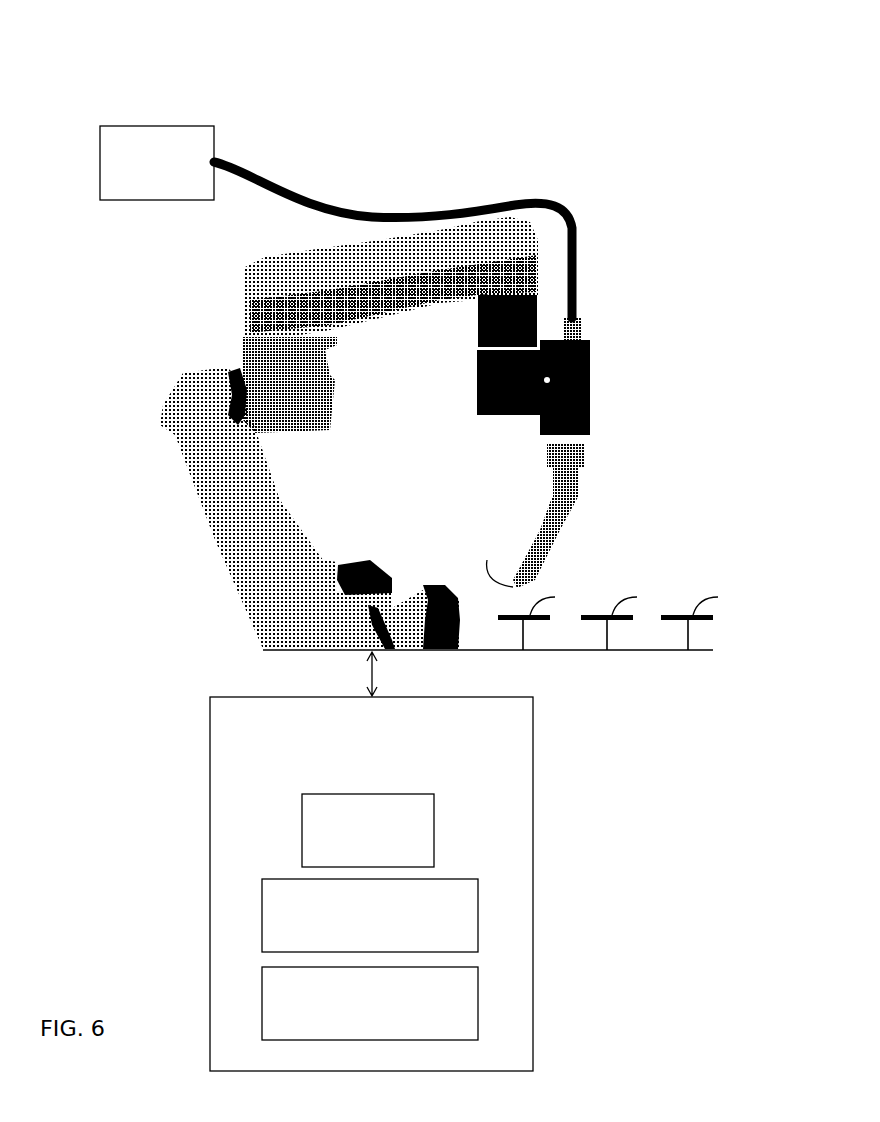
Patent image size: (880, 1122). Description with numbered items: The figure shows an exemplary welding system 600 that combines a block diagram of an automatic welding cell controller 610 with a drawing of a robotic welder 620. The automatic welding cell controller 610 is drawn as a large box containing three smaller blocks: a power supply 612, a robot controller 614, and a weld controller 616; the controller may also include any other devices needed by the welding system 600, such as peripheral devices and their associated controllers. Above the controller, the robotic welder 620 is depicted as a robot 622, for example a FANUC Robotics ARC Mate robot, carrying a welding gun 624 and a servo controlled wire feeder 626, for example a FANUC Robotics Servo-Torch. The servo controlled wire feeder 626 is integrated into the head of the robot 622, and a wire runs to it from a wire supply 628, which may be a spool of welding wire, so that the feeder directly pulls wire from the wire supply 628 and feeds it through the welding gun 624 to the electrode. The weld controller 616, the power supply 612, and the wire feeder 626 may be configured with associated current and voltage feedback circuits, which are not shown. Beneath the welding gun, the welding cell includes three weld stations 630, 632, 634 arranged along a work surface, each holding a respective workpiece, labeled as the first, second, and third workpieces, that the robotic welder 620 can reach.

The welding system 600 is at (88, 44).
The automatic welding cell controller 610 is at (210, 778).
The power supply 612 is at (434, 838).
The robot controller 614 is at (478, 910).
The weld controller 616 is at (478, 999).
The robotic welder 620 is at (367, 433).
The robot 622 is at (207, 385).
The welding gun 624 is at (577, 482).
The servo controlled wire feeder 626 is at (592, 362).
The wire supply 628 is at (183, 126).
The weld station 630 is at (529, 666).
The weld station 632 is at (613, 666).
The weld station 634 is at (694, 666).